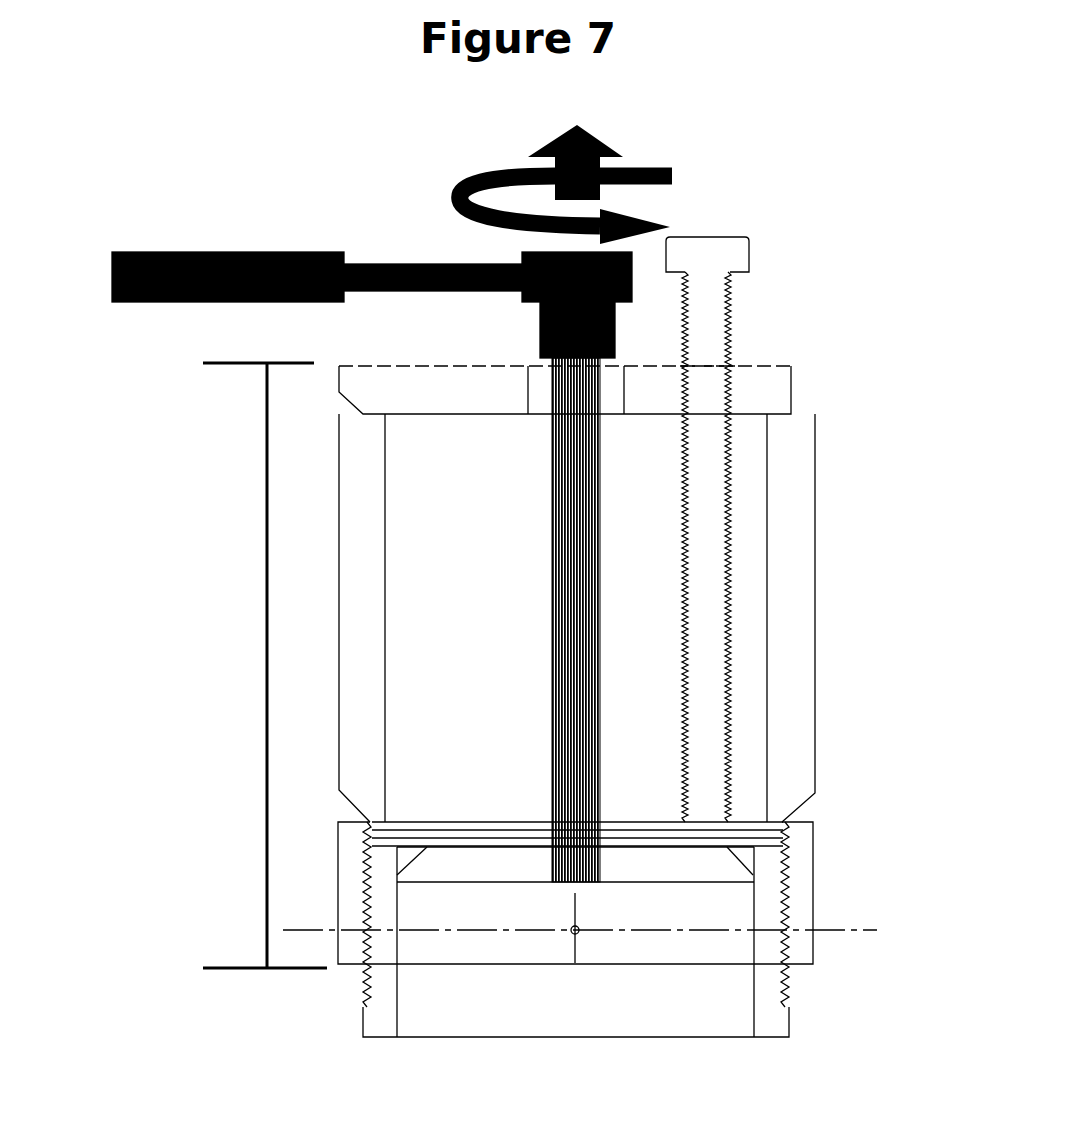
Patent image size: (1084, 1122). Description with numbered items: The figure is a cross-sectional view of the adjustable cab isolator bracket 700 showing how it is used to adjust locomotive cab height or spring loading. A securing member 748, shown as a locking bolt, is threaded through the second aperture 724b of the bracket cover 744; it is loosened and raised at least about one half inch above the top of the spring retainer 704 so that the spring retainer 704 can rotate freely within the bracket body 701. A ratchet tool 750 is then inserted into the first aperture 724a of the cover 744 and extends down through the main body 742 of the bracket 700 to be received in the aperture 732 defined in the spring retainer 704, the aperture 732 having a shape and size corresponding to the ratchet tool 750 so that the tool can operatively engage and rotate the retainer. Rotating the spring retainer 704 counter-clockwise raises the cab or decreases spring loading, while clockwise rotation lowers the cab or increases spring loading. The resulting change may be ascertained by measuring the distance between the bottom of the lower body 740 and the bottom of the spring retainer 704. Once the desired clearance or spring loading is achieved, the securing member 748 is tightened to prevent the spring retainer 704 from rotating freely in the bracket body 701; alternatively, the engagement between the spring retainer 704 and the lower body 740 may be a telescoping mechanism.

The adjustable cab isolator bracket 700 is at (168, 506).
The bracket body 701 is at (265, 665).
The spring retainer 704 is at (433, 890).
The first aperture 724a is at (545, 387).
The second aperture 724b is at (732, 362).
The aperture 732 is at (603, 862).
The lower body 740 is at (813, 905).
The main body 742 is at (783, 702).
The bracket cover 744 is at (783, 387).
The securing member 748 is at (705, 632).
The ratchet tool 750 is at (191, 252).